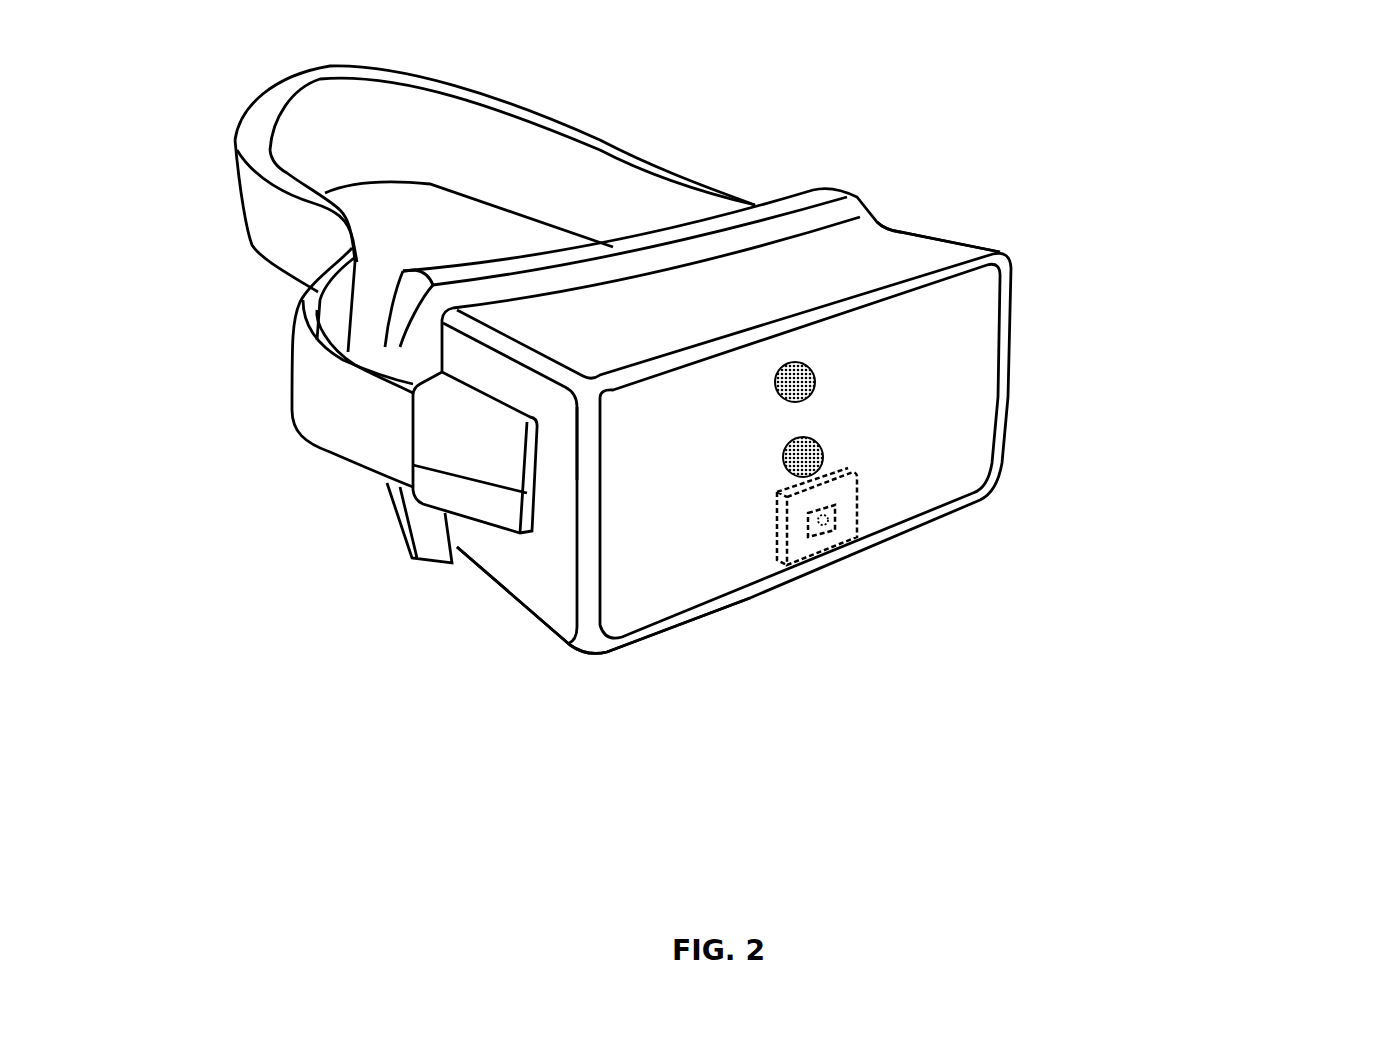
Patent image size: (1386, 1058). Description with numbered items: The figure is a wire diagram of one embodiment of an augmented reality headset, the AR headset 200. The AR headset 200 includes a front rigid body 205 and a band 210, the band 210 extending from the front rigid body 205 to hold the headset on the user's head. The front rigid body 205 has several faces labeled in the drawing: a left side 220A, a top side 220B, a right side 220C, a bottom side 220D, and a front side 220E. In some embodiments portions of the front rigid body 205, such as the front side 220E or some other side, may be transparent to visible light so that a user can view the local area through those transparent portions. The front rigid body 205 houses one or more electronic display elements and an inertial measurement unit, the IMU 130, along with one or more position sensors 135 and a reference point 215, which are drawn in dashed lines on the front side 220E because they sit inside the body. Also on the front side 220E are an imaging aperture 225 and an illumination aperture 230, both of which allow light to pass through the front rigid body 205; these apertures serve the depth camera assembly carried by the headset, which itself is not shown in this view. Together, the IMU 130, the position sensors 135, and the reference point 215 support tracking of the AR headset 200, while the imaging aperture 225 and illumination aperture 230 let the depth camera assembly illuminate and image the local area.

The AR headset 200 is at (163, 60).
The front rigid body 205 is at (742, 453).
The band 210 is at (632, 155).
The reference point 215 is at (848, 528).
The left side 220A is at (976, 231).
The top side 220B is at (529, 316).
The right side 220C is at (542, 571).
The bottom side 220D is at (488, 621).
The front side 220E is at (642, 618).
The imaging aperture 225 is at (839, 441).
The illumination aperture 230 is at (829, 365).
The IMU 130 is at (877, 520).
The position sensors 135 is at (801, 538).